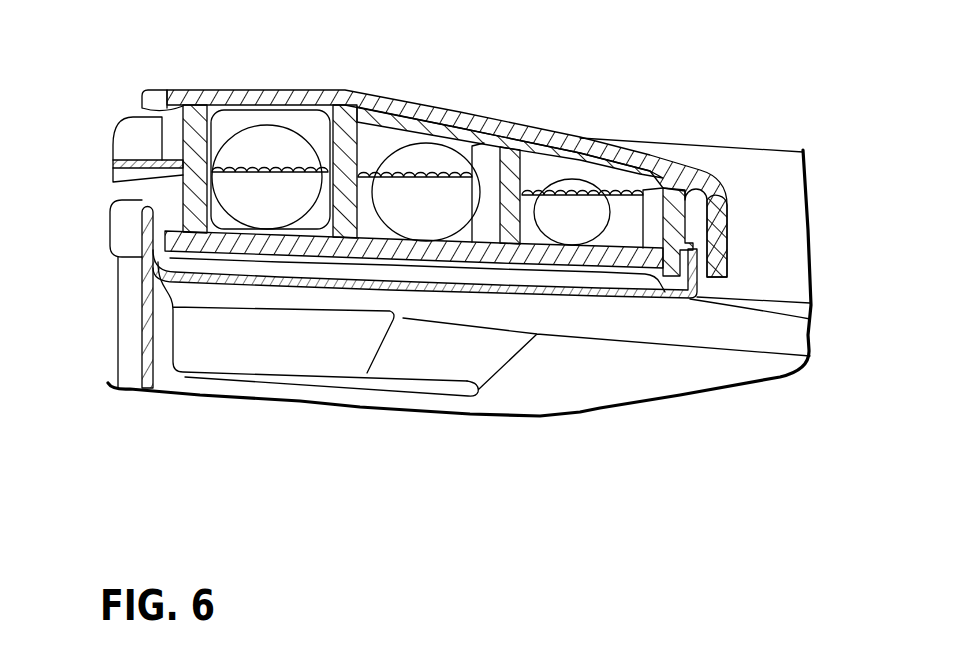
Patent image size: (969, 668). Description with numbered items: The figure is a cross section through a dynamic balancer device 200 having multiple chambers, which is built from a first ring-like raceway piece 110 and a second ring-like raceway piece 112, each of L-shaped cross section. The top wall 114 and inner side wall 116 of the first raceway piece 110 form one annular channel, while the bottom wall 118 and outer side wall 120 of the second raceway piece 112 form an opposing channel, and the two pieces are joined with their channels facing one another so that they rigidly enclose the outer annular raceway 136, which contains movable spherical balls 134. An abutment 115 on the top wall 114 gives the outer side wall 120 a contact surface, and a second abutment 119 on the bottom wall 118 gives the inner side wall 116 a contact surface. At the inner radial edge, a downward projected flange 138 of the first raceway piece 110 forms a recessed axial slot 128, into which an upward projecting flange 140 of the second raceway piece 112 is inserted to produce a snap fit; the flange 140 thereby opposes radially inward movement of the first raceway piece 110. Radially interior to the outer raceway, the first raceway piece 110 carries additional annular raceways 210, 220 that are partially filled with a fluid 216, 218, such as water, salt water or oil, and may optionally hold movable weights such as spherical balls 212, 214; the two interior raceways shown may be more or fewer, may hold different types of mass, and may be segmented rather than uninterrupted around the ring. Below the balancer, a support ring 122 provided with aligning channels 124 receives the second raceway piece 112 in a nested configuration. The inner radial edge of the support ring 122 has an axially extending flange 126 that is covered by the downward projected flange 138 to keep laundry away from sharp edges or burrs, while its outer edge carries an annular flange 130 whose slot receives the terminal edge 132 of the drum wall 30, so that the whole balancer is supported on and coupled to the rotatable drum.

The wall 30 is at (128, 360).
The first ring-like raceway piece 110 is at (348, 88).
The second ring-like raceway piece 112 is at (181, 190).
The top wall 114 is at (296, 108).
The abutment 115 is at (204, 118).
The inner side wall 116 is at (374, 127).
The bottom wall 118 is at (247, 232).
The second abutment 119 is at (352, 222).
The outer side wall 120 is at (200, 149).
The support ring 122 is at (562, 302).
The aligning channels 124 is at (293, 347).
The axially extending flange 126 is at (697, 293).
The recessed axial slot 128 is at (723, 190).
The annular flange 130 is at (123, 227).
The terminal edge 132 is at (130, 258).
The spherical balls 134 is at (277, 132).
The annular raceway 136 is at (227, 124).
The downward projected flange 138 is at (721, 240).
The flange 140 is at (675, 213).
The dynamic balancer device 200 is at (68, 43).
The additional annular raceway 210 is at (400, 112).
The spherical ball 212 is at (430, 147).
The spherical ball 214 is at (580, 177).
The fluid 216 is at (487, 222).
The fluid 218 is at (627, 228).
The additional annular raceway 220 is at (528, 170).